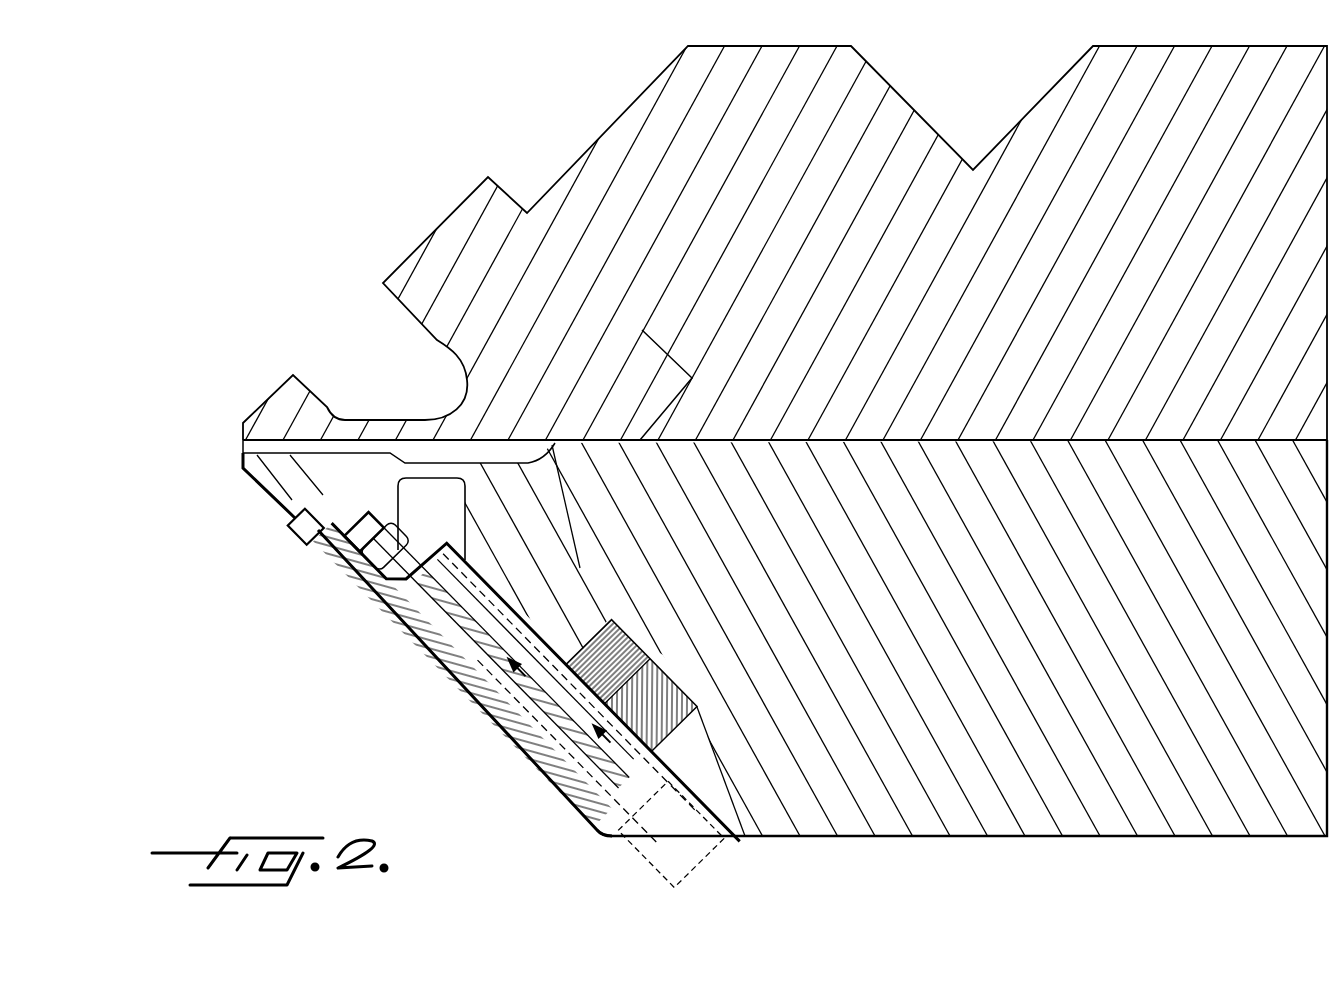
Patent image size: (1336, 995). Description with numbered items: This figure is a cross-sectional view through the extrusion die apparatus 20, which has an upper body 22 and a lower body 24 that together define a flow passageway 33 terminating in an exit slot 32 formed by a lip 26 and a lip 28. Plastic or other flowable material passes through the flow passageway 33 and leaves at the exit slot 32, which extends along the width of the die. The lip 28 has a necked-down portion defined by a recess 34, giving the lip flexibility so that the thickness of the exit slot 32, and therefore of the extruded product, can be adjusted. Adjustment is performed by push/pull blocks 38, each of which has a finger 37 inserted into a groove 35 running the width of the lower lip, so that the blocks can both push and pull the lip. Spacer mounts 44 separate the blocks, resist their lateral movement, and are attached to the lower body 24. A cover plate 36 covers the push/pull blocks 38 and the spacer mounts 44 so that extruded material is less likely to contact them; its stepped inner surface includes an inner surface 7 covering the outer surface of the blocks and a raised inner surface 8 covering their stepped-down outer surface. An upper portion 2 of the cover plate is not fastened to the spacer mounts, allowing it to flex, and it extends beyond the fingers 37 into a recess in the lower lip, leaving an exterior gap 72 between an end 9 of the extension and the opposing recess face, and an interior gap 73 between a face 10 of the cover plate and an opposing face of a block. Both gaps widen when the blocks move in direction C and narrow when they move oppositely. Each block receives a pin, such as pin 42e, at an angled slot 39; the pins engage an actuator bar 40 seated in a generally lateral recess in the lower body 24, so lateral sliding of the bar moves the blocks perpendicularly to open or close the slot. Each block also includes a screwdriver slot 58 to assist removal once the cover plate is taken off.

The extrusion die apparatus 20 is at (360, 203).
The upper body 22 is at (612, 125).
The lower body 24 is at (990, 808).
The lip 26 is at (270, 412).
The lip 28 is at (258, 482).
The exit slot 32 is at (243, 445).
The flow passageway 33 is at (492, 450).
The recess 34 is at (433, 488).
The groove 35 is at (378, 550).
The cover plate 36 is at (502, 735).
The finger 37 is at (358, 525).
The push/pull block 38 is at (388, 625).
The angled slot 39 is at (605, 642).
The actuator bar 40 is at (694, 672).
The pin 42e is at (565, 790).
The spacer mount 44 is at (660, 838).
The screwdriver slot 58 is at (700, 818).
The end 9 is at (305, 515).
The exterior gap 72 is at (318, 545).
The upper portion 2 is at (335, 575).
The inner surface 7 is at (370, 600).
The face 10 is at (425, 622).
The interior gap 73 is at (445, 665).
The raised inner surface 8 is at (592, 812).
The direction C is at (525, 676).